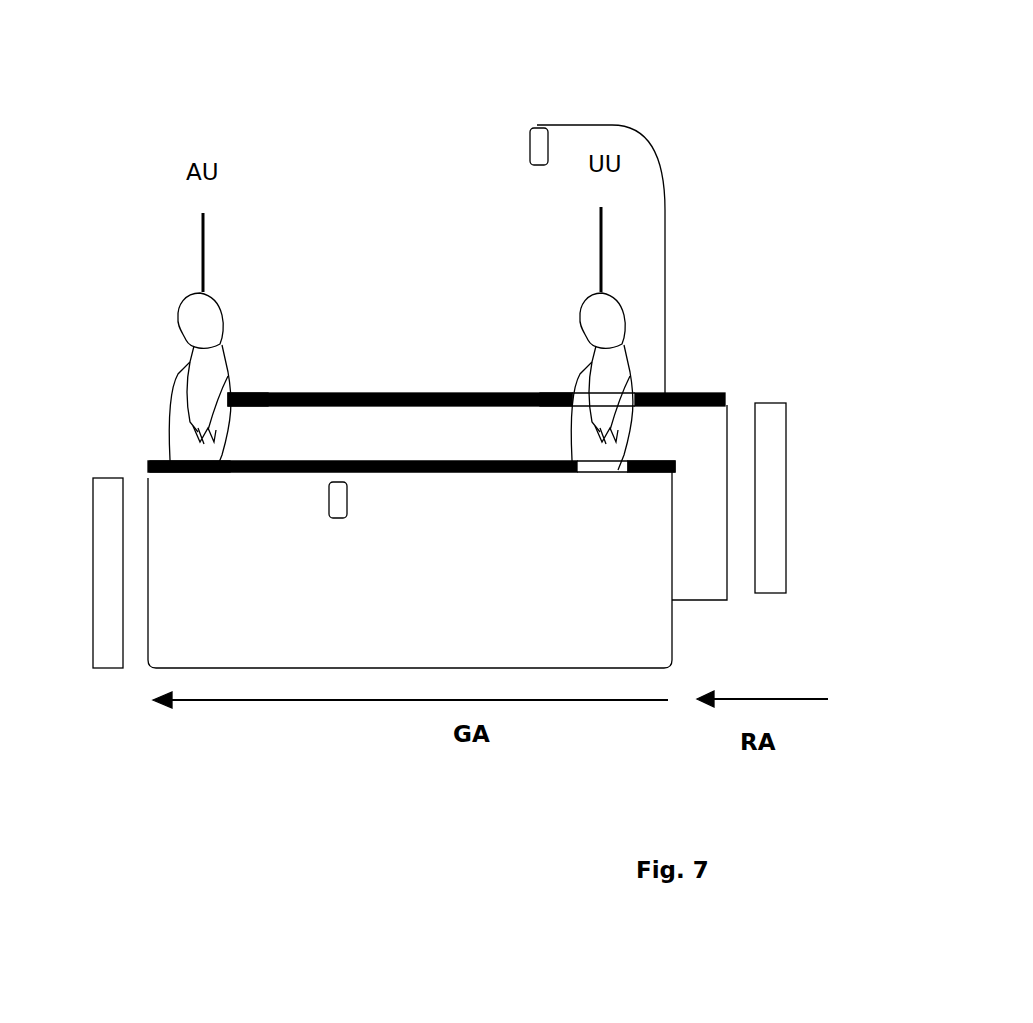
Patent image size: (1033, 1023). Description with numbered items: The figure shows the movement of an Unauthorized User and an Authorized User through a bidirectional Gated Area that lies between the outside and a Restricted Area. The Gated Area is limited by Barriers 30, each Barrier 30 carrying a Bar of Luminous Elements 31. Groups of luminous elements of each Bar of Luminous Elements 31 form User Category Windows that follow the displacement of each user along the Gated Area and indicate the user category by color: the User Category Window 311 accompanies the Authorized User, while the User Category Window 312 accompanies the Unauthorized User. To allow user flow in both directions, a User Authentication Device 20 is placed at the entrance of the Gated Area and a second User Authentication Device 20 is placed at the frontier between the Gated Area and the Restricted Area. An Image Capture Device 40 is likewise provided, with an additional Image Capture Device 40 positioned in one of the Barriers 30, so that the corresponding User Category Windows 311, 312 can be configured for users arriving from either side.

The User Authentication Device 20 is at (114, 670).
The Barrier 30 is at (672, 647).
The Bar of Luminous Elements 31 is at (152, 461).
The User Category Window 311 is at (243, 393).
The User Category Window 312 is at (563, 393).
The Image Capture Device 40 is at (537, 130).